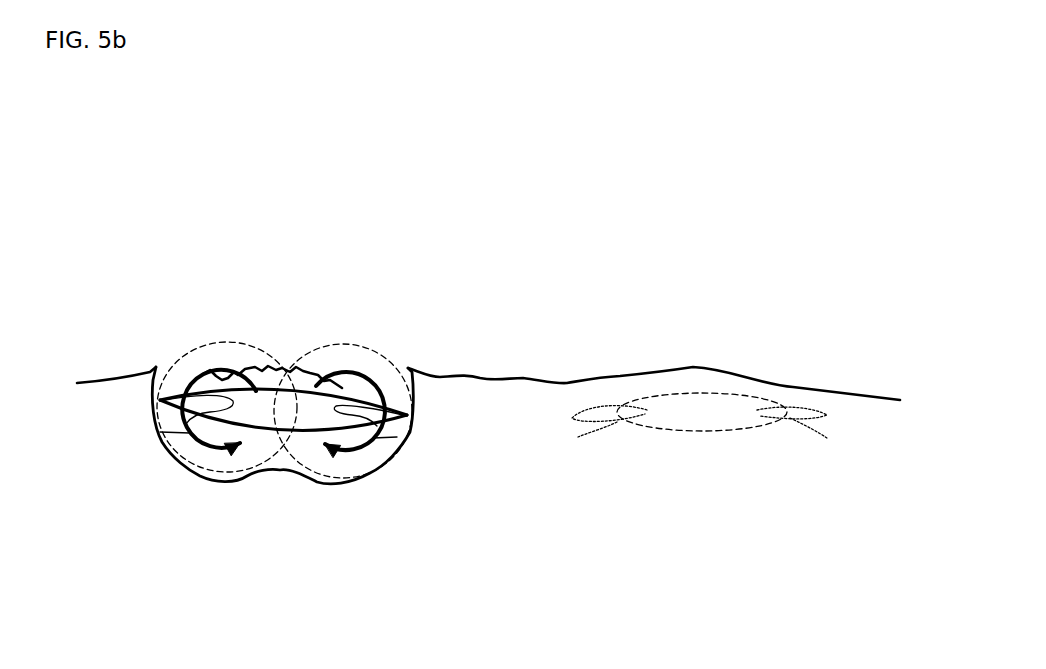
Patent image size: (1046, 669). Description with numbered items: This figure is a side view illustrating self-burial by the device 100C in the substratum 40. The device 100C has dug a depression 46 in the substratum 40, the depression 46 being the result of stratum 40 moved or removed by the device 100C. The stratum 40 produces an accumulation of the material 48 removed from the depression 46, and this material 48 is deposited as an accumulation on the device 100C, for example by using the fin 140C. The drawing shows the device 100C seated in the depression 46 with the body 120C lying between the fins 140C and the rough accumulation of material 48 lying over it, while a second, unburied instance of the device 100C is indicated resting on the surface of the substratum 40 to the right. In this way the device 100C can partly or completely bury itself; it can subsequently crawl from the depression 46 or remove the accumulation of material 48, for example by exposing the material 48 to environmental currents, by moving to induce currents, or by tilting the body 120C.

The substratum 40 is at (521, 377).
The depression 46 is at (280, 470).
The accumulation of material 48 is at (260, 372).
The device 100C is at (225, 302).
The body 120C is at (307, 408).
The fin 140C is at (397, 407).